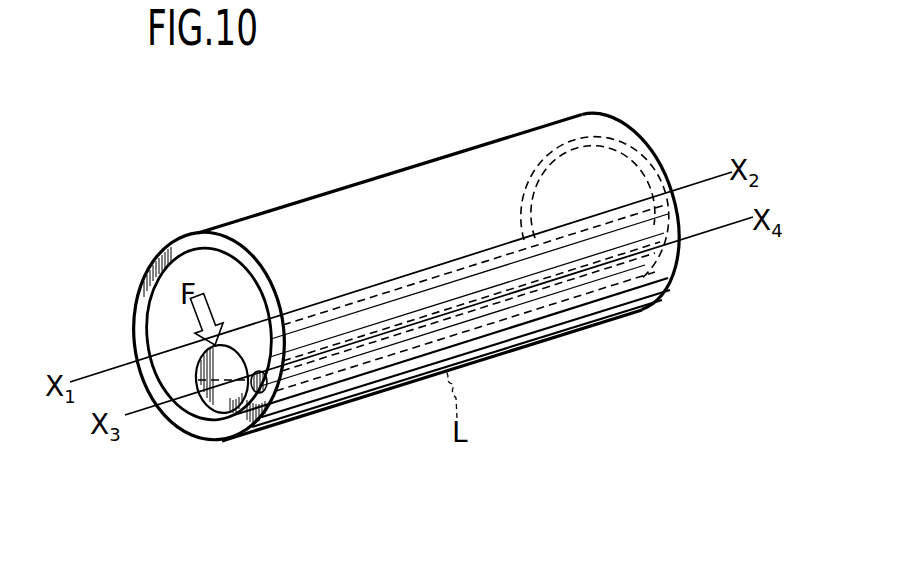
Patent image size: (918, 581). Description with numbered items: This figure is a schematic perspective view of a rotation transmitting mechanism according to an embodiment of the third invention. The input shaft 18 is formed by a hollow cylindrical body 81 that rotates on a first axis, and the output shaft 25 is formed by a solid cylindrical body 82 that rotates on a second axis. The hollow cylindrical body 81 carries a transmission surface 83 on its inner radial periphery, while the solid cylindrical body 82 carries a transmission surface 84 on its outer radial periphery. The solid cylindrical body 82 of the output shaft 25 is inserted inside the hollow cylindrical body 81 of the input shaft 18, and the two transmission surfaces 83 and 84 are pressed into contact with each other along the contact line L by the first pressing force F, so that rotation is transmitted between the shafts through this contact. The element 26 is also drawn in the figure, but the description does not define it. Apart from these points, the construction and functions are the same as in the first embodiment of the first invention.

The input shaft 18 is at (196, 228).
The hollow cylindrical body 81 is at (215, 245).
The transmission surface 83 is at (168, 266).
The solid cylindrical body 82 is at (226, 418).
The pin 26 is at (270, 405).
The transmission surface 84 is at (173, 425).
The output shaft 25 is at (198, 438).